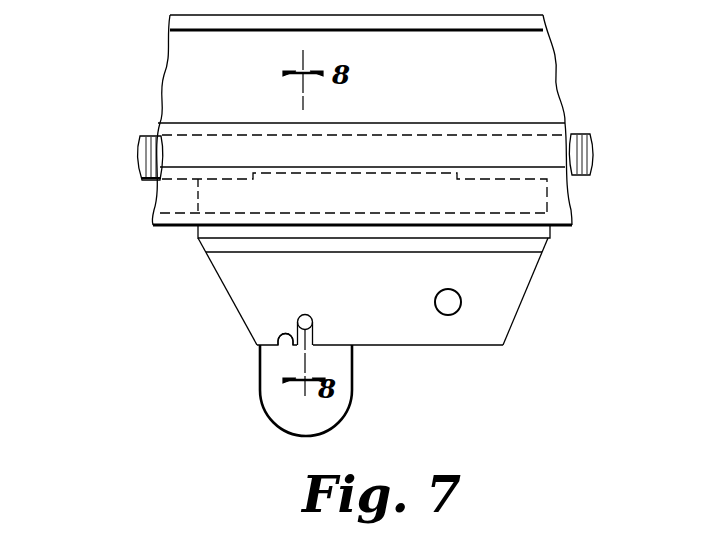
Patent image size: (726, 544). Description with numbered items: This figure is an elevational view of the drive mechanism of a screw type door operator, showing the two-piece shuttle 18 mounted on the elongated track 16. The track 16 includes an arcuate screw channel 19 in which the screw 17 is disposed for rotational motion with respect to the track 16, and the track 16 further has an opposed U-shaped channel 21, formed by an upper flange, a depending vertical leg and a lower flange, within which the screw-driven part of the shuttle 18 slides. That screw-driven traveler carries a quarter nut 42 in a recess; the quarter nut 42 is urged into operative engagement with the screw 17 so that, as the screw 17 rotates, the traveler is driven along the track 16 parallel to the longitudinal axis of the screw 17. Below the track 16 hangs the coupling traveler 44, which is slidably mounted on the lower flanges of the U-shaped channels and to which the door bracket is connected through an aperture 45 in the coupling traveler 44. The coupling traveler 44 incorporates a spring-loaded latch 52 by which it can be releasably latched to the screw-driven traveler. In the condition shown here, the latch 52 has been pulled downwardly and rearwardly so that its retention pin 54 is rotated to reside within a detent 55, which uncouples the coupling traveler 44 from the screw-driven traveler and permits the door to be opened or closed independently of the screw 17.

The elongated track 16 is at (188, 95).
The screw 17 is at (142, 182).
The shuttle 18 is at (213, 315).
The arcuate screw channel 19 is at (394, 134).
The U-shaped channel 21 is at (163, 227).
The quarter nut 42 is at (455, 176).
The coupling traveler 44 is at (549, 251).
The aperture 45 is at (460, 293).
The spring-loaded latch 52 is at (260, 387).
The retention pin 54 is at (311, 319).
The detent 55 is at (287, 340).